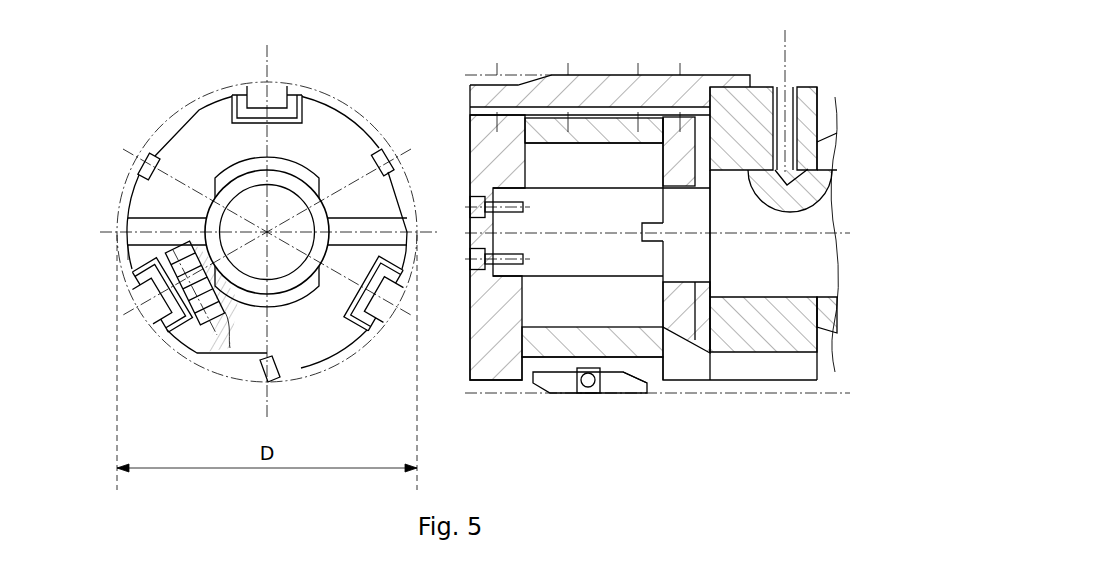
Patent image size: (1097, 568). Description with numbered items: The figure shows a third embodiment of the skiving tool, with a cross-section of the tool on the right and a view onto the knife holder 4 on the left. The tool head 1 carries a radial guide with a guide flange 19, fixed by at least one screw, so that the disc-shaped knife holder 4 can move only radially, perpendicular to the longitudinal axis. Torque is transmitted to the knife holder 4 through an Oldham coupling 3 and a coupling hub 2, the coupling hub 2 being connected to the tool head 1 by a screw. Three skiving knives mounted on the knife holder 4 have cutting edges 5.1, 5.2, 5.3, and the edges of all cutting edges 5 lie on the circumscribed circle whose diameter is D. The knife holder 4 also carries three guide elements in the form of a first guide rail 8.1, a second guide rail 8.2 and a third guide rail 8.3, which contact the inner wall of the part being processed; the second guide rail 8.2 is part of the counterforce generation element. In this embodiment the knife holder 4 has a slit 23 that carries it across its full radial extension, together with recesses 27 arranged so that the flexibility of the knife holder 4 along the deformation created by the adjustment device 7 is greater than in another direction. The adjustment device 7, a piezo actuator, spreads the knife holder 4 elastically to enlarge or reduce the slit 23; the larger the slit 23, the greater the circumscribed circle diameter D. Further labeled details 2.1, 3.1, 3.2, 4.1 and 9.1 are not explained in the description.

The tool head 1 is at (740, 282).
The coupling hub 2 is at (780, 340).
The bore 2.1 is at (787, 103).
The Oldham coupling 3 is at (677, 318).
The centering hole 3.1 is at (642, 236).
The bearing 3.2 is at (695, 137).
The knife holder 4 is at (334, 320).
The clamping element 4.1 is at (252, 368).
The cutting edge 5 is at (557, 393).
The cutting edge 5.1 is at (640, 393).
The cutting edge 5.2 is at (143, 160).
The cutting edge 5.3 is at (385, 155).
The adjustment device 7 is at (195, 318).
The first guide rail 8.1 is at (150, 308).
The second guide rail 8.2 is at (258, 96).
The third guide rail 8.3 is at (387, 310).
The sensor 9.1 is at (476, 197).
The guide flange 19 is at (490, 360).
The slit 23 is at (136, 268).
The recesses 27 is at (300, 172).